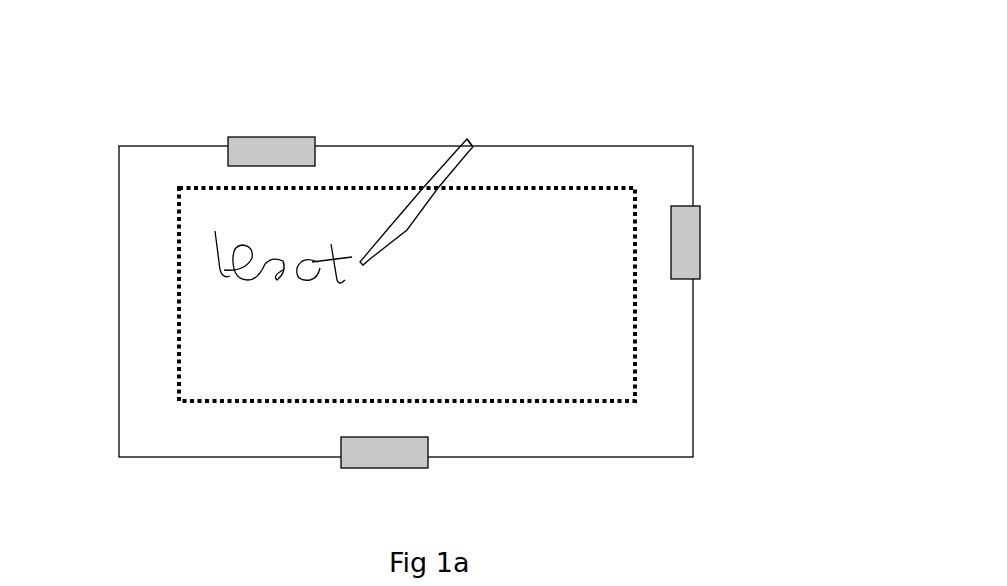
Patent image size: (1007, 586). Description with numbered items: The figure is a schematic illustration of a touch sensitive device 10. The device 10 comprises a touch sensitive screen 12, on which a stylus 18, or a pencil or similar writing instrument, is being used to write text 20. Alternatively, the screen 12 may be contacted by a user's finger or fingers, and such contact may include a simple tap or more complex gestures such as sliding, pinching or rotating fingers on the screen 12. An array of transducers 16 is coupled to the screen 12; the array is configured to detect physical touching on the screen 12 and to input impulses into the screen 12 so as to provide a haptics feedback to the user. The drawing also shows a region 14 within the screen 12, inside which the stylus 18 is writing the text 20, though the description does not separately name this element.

The touch sensitive device 10 is at (716, 106).
The touch sensitive screen 12 is at (287, 438).
The display / touch screen 14 is at (222, 403).
The transducers 16 is at (263, 152).
The stylus 18 is at (475, 147).
The text 20 is at (243, 247).